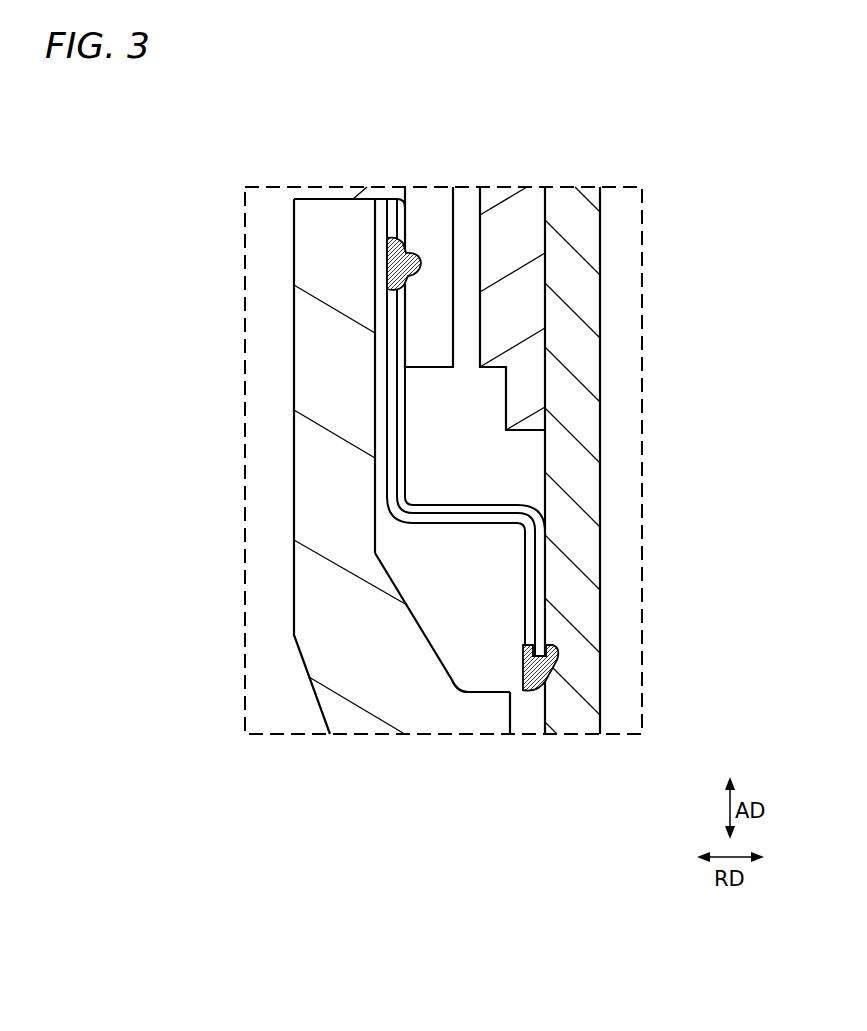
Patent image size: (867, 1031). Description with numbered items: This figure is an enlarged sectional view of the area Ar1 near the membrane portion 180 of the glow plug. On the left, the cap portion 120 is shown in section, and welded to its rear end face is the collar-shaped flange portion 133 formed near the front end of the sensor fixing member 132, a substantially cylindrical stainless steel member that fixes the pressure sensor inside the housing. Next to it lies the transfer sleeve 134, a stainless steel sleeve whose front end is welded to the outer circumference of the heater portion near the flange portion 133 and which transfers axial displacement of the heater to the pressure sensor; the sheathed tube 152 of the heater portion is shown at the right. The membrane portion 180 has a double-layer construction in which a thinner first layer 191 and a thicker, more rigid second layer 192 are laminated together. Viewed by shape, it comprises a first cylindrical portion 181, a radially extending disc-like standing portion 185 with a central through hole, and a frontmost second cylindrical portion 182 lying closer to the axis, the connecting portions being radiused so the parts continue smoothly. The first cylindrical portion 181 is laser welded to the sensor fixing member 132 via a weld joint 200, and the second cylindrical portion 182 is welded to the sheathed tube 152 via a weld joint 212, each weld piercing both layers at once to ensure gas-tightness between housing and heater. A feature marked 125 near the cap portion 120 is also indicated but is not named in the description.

The area Ar1 is at (624, 186).
The cap portion 120 is at (318, 708).
The gap 125 is at (520, 752).
The sensor fixing member 132 is at (438, 214).
The flange portion 133 is at (309, 191).
The transfer sleeve 134 is at (524, 303).
The sheathed tube 152 is at (575, 474).
The membrane portion 180 is at (331, 427).
The first cylindrical portion 181 is at (382, 405).
The second cylindrical portion 182 is at (517, 615).
The standing portion 185 is at (464, 498).
The first layer 191 is at (405, 348).
The second layer 192 is at (392, 372).
The weld joint 200 is at (388, 250).
The weld joint 212 is at (550, 663).